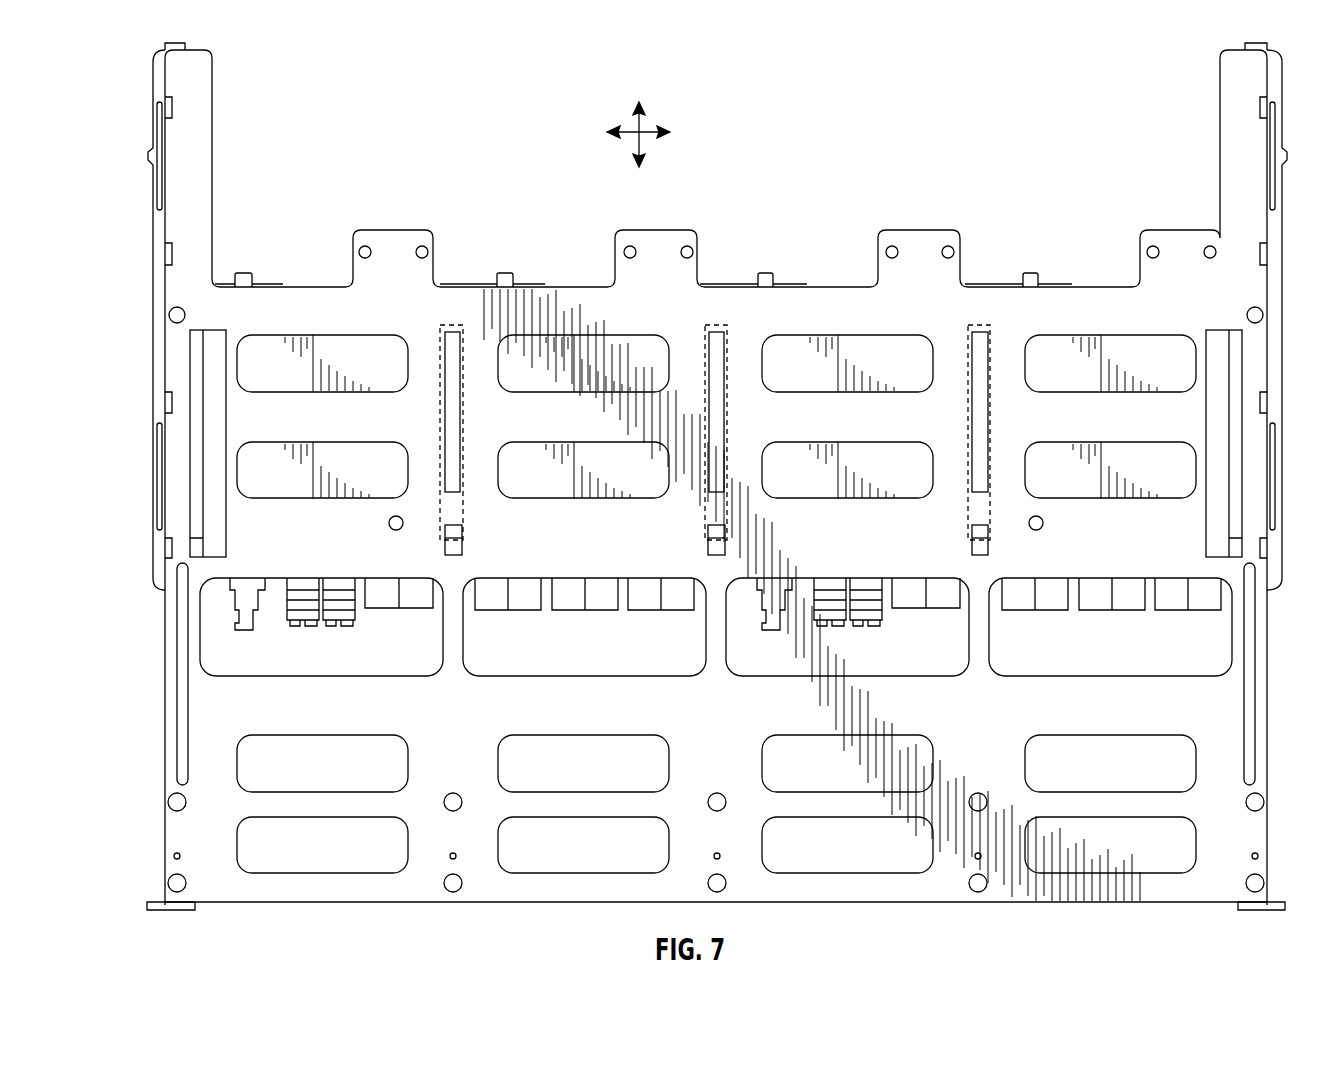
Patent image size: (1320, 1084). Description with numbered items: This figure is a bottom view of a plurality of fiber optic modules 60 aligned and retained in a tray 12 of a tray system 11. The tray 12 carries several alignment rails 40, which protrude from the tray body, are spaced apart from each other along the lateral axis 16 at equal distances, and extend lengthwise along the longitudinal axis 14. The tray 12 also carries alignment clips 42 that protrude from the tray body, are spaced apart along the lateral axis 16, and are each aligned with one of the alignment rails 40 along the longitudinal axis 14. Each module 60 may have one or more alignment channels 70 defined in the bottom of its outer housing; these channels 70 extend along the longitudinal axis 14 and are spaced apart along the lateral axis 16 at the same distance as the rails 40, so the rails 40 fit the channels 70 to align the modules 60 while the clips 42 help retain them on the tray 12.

The tray system 11 is at (1057, 135).
The tray 12 is at (205, 735).
The longitudinal axis 14 is at (642, 120).
The lateral axis 16 is at (630, 130).
The alignment rail 40 is at (455, 414).
The alignment clip 42 is at (455, 530).
The fiber optic module 60 is at (567, 353).
The alignment channel 70 is at (460, 332).